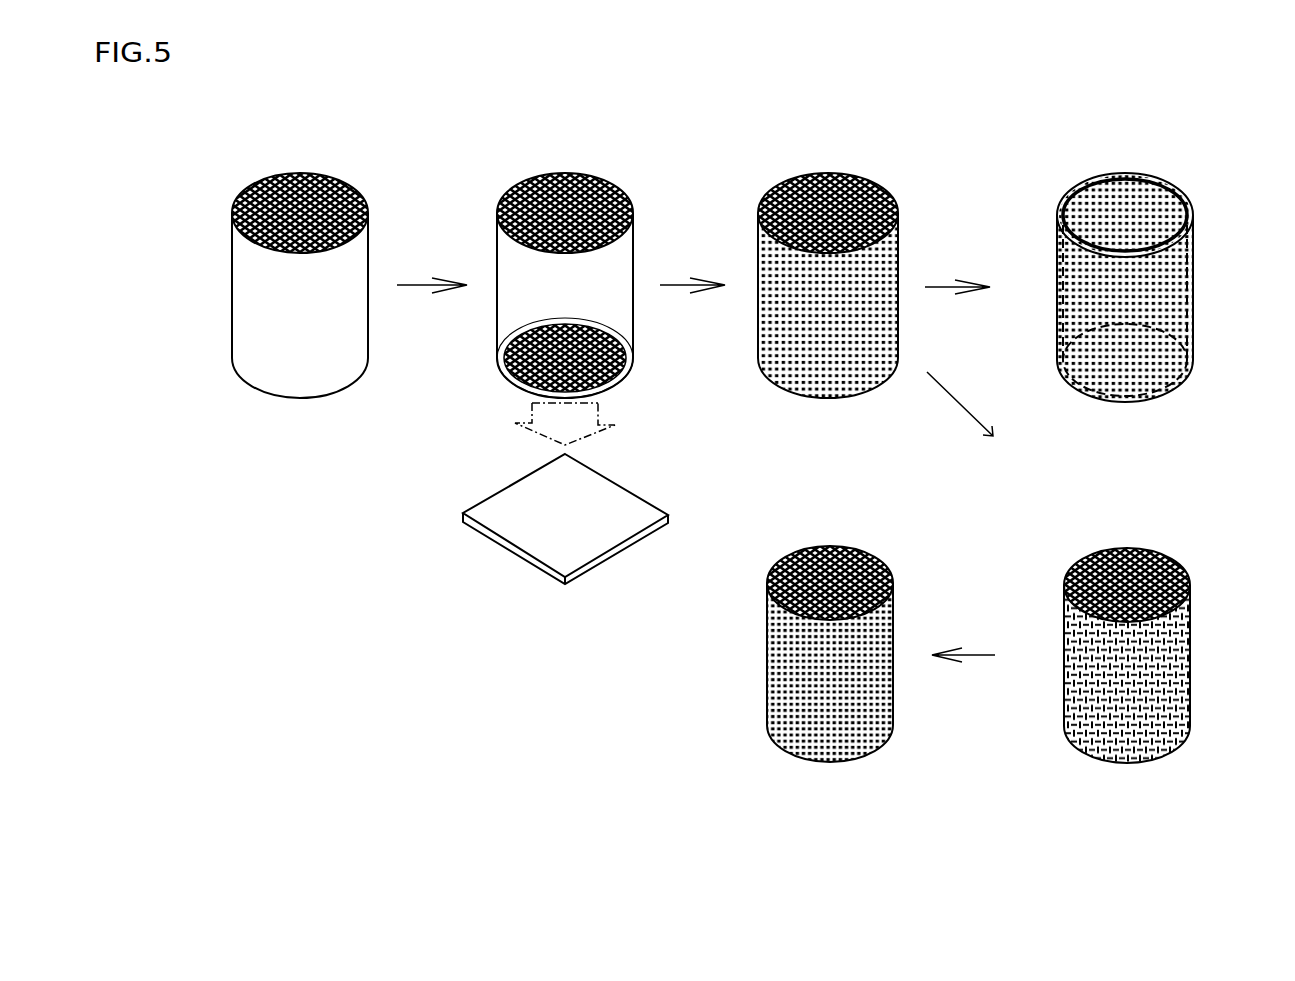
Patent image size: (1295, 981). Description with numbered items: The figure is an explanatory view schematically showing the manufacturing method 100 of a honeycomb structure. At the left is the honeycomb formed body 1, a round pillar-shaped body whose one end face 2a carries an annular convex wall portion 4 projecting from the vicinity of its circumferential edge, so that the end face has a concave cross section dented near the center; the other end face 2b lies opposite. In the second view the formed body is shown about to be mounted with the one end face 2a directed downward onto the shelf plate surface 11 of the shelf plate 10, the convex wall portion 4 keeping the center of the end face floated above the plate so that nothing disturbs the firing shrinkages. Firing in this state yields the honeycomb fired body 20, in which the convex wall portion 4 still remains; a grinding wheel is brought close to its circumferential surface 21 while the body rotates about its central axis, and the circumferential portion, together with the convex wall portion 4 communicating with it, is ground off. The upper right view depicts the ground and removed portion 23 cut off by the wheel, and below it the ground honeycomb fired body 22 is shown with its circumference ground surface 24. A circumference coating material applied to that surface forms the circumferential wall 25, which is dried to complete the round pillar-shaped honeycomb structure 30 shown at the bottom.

The honeycomb formed body 1 is at (385, 234).
The one end face 2a is at (517, 391).
The other end face 2b is at (617, 173).
The convex wall portion 4 is at (360, 187).
The shelf plate 10 is at (578, 532).
The shelf plate surface 11 is at (633, 521).
The honeycomb fired body 20 is at (864, 283).
The circumferential surface 21 is at (887, 319).
The ground honeycomb fired body 22 is at (1162, 655).
The ground and removed portion 23 is at (1197, 203).
The circumference ground surface 24 is at (1172, 692).
The circumferential wall 25 is at (888, 687).
The honeycomb structure 30 is at (863, 640).
The manufacturing method 100 is at (1000, 126).